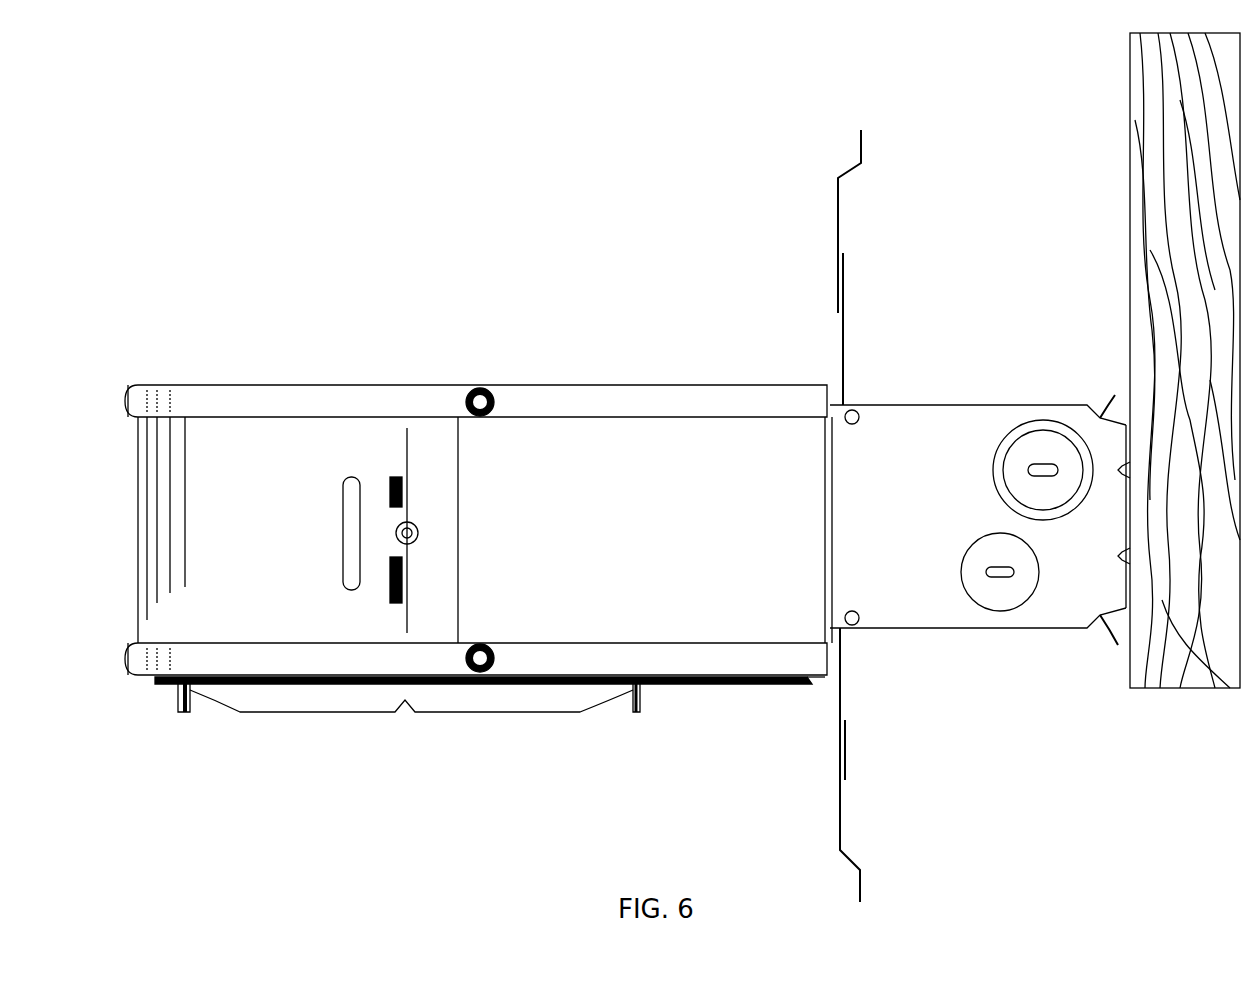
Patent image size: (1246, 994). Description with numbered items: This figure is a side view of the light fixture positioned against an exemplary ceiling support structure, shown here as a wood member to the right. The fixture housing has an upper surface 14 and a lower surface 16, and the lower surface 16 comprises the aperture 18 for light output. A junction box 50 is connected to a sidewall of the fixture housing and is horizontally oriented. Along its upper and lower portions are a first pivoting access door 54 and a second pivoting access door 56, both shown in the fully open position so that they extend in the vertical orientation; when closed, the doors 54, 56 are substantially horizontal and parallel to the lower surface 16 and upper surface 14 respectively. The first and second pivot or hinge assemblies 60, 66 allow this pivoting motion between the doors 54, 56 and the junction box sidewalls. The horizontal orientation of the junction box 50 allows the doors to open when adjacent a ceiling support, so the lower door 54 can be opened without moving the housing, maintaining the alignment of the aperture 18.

The upper surface 14 is at (420, 338).
The lower surface 16 is at (712, 722).
The light aperture 18 is at (318, 722).
The junction box 50 is at (980, 650).
The first pivoting access door 54 is at (820, 835).
The second pivoting access door 56 is at (822, 192).
The first pivot or hinge assembly 60 is at (866, 610).
The second pivot or hinge assembly 66 is at (866, 420).